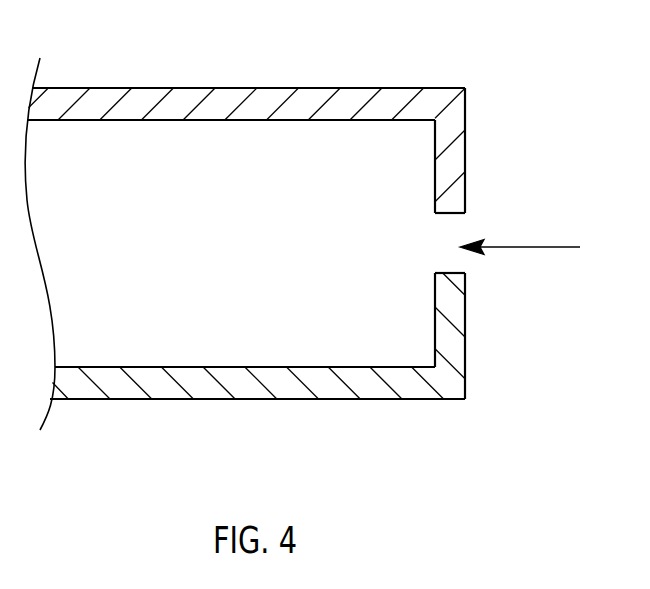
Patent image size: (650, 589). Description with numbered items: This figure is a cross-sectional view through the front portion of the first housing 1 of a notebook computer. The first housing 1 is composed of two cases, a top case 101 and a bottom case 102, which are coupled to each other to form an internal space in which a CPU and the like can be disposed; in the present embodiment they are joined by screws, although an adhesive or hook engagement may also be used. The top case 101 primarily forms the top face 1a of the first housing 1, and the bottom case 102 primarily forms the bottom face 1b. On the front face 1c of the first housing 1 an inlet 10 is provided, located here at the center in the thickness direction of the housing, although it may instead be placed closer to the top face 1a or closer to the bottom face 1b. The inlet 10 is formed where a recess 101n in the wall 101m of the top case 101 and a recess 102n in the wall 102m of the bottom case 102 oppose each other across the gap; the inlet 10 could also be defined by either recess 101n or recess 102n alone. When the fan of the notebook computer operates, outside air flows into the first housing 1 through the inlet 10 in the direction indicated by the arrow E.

The first housing 1 is at (298, 88).
The top face 1a is at (174, 88).
The bottom face 1b is at (180, 400).
The front face 1c is at (468, 115).
The inlet 10 is at (482, 287).
The top case 101 is at (108, 100).
The wall of the top case 101m is at (458, 150).
The recess of the top case 101n is at (450, 213).
The bottom case 102 is at (277, 383).
The wall of the bottom case 102m is at (450, 343).
The recess of the bottom case 102n is at (450, 273).
The arrow indicating air flow E is at (575, 246).